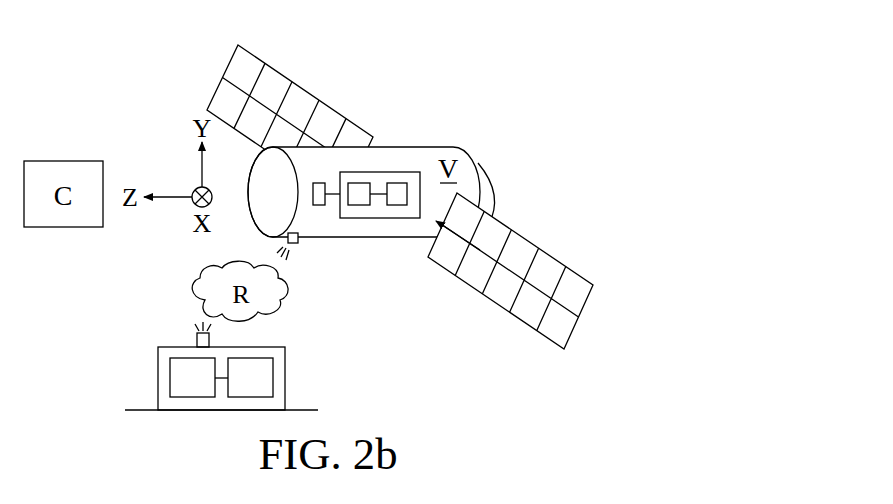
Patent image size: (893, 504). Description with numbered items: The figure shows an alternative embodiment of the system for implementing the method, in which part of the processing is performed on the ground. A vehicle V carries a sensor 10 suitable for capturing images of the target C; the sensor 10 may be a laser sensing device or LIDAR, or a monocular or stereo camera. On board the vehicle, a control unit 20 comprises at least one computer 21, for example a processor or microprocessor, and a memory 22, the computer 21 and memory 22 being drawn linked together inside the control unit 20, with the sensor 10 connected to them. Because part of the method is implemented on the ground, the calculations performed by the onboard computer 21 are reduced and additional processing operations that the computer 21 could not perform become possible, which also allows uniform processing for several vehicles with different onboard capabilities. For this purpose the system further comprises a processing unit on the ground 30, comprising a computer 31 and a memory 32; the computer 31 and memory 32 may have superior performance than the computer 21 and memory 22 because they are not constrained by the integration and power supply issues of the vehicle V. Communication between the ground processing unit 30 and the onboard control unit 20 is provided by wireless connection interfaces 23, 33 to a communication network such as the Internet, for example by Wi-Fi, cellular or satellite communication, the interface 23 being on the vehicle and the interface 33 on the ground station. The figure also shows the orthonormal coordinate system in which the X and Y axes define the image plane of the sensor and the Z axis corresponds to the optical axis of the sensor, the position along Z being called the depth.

The sensor 10 is at (320, 205).
The control unit 20 is at (379, 165).
The computer 21 is at (360, 207).
The memory 22 is at (398, 184).
The wireless connection interface 23 is at (298, 243).
The processing unit on the ground 30 is at (251, 360).
The computer 31 is at (179, 390).
The memory 32 is at (237, 390).
The wireless connection interface 33 is at (197, 338).